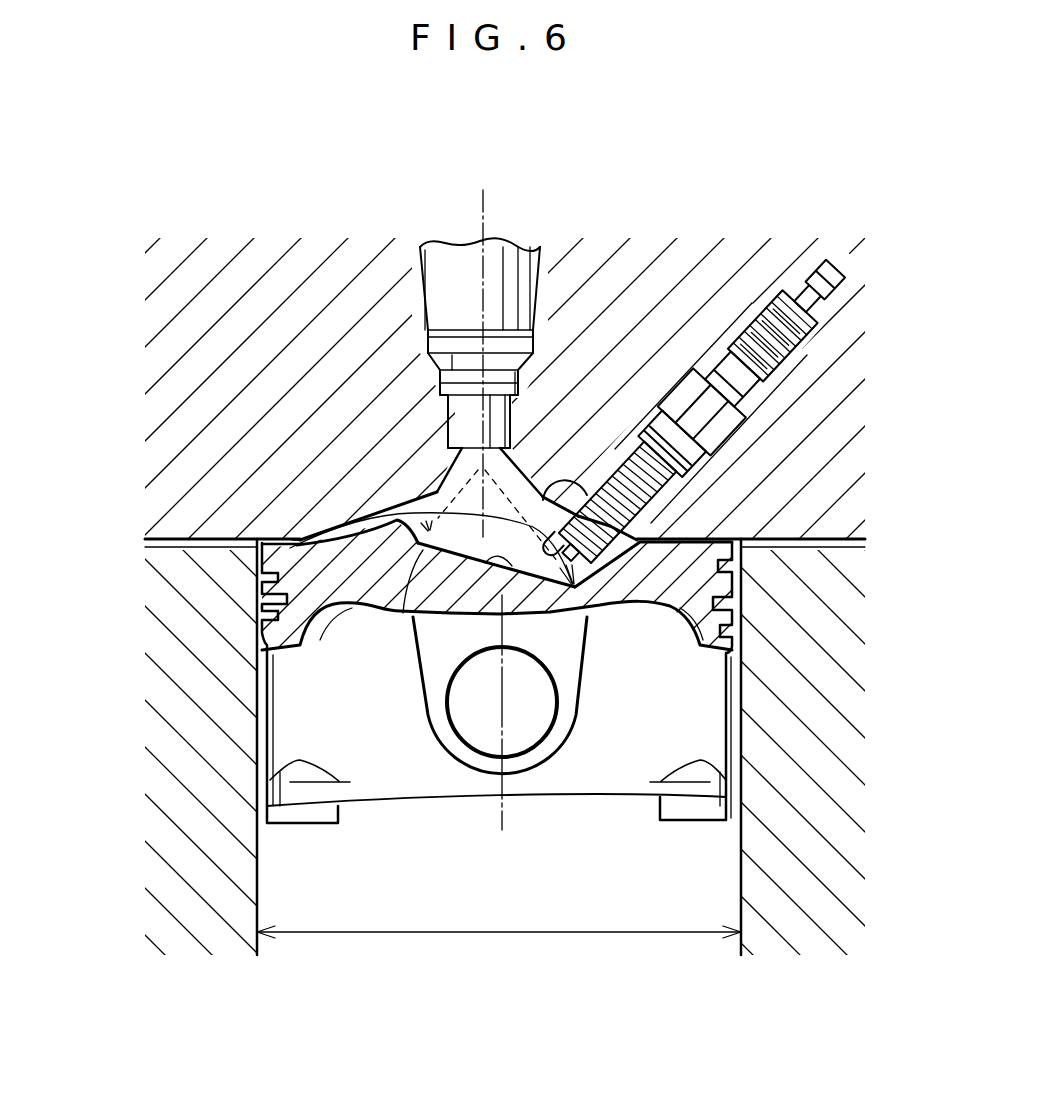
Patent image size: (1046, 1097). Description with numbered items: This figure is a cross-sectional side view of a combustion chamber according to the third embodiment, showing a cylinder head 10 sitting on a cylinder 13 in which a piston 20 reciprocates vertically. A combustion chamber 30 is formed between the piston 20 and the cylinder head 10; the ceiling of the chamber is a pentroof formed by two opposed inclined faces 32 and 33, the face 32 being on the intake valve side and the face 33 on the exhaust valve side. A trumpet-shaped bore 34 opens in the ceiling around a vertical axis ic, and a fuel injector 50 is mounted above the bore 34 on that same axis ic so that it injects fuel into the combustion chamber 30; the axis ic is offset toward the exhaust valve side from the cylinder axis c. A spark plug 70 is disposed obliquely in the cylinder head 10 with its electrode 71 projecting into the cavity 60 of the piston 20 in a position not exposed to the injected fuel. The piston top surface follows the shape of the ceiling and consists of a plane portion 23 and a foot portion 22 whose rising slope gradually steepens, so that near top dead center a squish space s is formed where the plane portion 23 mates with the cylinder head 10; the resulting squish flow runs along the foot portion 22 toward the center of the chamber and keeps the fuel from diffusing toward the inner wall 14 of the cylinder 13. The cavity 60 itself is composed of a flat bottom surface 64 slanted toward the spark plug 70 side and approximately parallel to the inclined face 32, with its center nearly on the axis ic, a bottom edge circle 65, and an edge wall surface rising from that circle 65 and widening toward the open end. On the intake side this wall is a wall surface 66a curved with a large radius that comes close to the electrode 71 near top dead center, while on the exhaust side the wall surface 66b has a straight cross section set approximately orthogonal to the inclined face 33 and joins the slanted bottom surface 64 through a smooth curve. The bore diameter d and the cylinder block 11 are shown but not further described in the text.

The cylinder head 10 is at (197, 393).
The cylinder block 11 is at (185, 716).
The cylinder 13 is at (270, 895).
The inner wall of the cylinder 14 is at (720, 858).
The piston 20 is at (537, 602).
The foot portion 22 is at (350, 536).
The plane portion 23 is at (716, 543).
The combustion chamber 30 is at (376, 525).
The inclined face 32 is at (537, 494).
The inclined face 33 is at (358, 520).
The trumpet-shaped bore 34 is at (448, 490).
The fuel injector 50 is at (485, 341).
The cavity 60 is at (407, 617).
The flat bottom surface 64 is at (487, 562).
The bottom edge circle 65 is at (590, 622).
The wall surface 66a is at (622, 532).
The wall surface 66b is at (423, 548).
The spark plug 70 is at (726, 395).
The electrode 71 is at (530, 512).
The squish space s is at (292, 540).
The cylinder axis c is at (506, 815).
The cylinder bore diameter d is at (499, 912).
The axis of the fuel injector ic is at (480, 210).